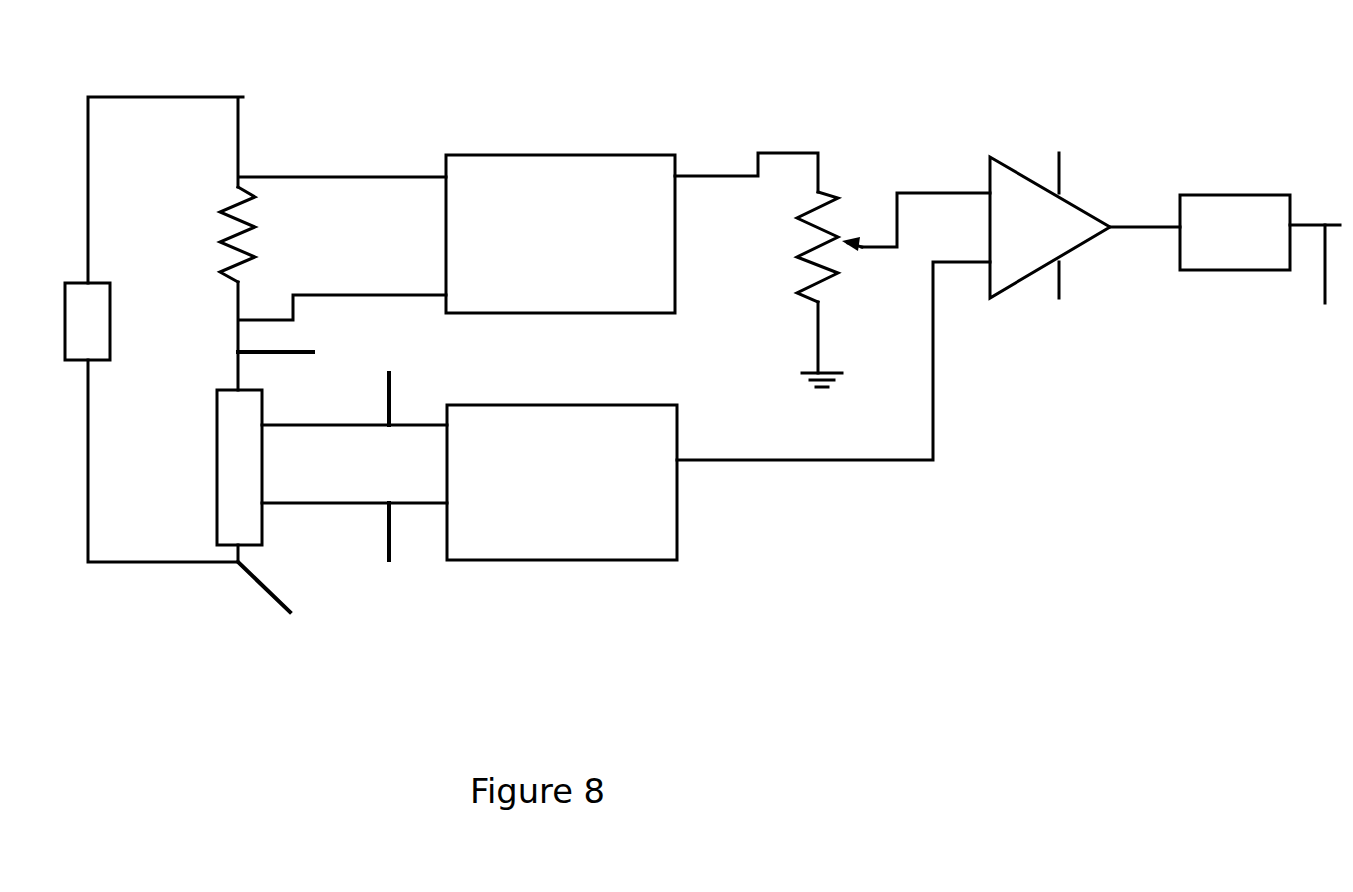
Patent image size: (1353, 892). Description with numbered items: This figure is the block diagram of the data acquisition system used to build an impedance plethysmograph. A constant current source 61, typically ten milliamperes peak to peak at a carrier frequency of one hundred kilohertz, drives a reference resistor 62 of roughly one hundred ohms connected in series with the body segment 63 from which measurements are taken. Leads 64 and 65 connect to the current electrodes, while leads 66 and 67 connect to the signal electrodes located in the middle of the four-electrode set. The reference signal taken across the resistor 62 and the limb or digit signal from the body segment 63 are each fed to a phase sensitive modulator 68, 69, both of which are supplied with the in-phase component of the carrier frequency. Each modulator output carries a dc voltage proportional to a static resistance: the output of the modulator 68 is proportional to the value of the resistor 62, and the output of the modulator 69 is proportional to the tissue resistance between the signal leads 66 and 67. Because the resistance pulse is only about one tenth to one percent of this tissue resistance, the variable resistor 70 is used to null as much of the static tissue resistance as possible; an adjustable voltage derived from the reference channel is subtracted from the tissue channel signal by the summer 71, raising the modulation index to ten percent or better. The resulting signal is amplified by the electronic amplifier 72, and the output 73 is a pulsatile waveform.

The light source 61 is at (87, 322).
The reference resistor 62 is at (235, 233).
The body segment 63 is at (240, 452).
The lead 64 is at (292, 352).
The lead 65 is at (279, 594).
The lead 66 is at (390, 379).
The lead 67 is at (389, 546).
The phase sensitive modulator 68 is at (507, 188).
The phase sensitive modulator 69 is at (509, 527).
The variable resistor 70 is at (798, 260).
The summer 71 is at (1021, 243).
The electronic amplifier 72 is at (1218, 242).
The output 73 is at (1328, 281).